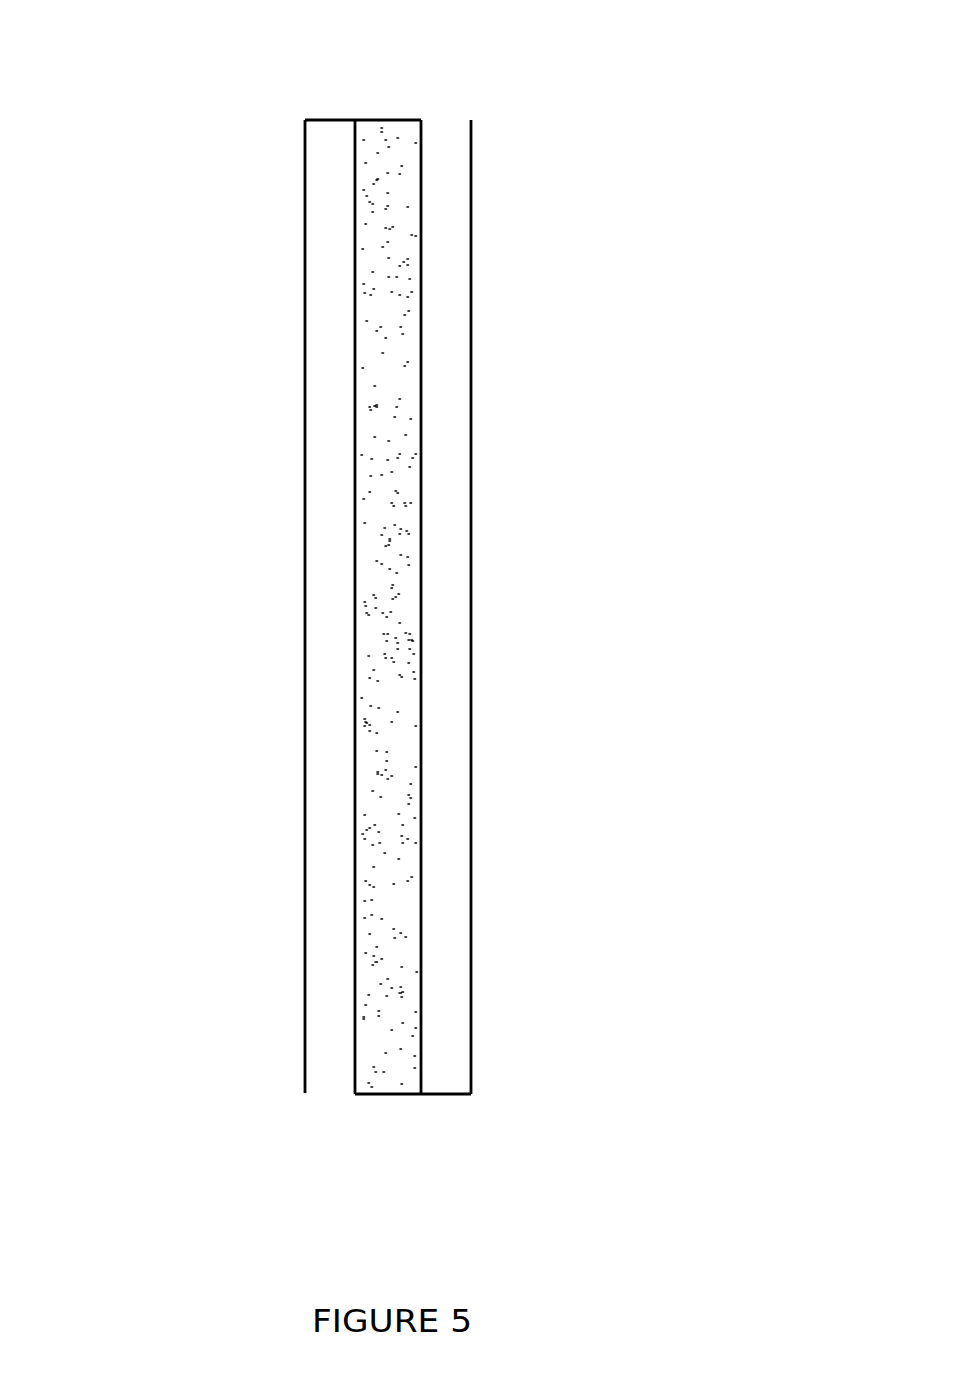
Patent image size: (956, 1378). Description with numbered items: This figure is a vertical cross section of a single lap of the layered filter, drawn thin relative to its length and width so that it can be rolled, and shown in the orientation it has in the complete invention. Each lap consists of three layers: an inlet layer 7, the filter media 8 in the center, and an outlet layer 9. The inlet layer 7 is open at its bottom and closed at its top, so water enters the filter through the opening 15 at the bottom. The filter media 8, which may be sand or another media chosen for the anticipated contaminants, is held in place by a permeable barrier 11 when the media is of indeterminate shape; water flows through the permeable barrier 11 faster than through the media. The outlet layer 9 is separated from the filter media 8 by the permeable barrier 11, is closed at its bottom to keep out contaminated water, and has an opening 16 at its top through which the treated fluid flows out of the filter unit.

The inlet layer 7 is at (330, 584).
The filter media 8 is at (395, 367).
The outlet layer 9 is at (443, 509).
The permeable barrier 11 is at (355, 917).
The opening 15 is at (325, 1094).
The opening 16 is at (447, 119).